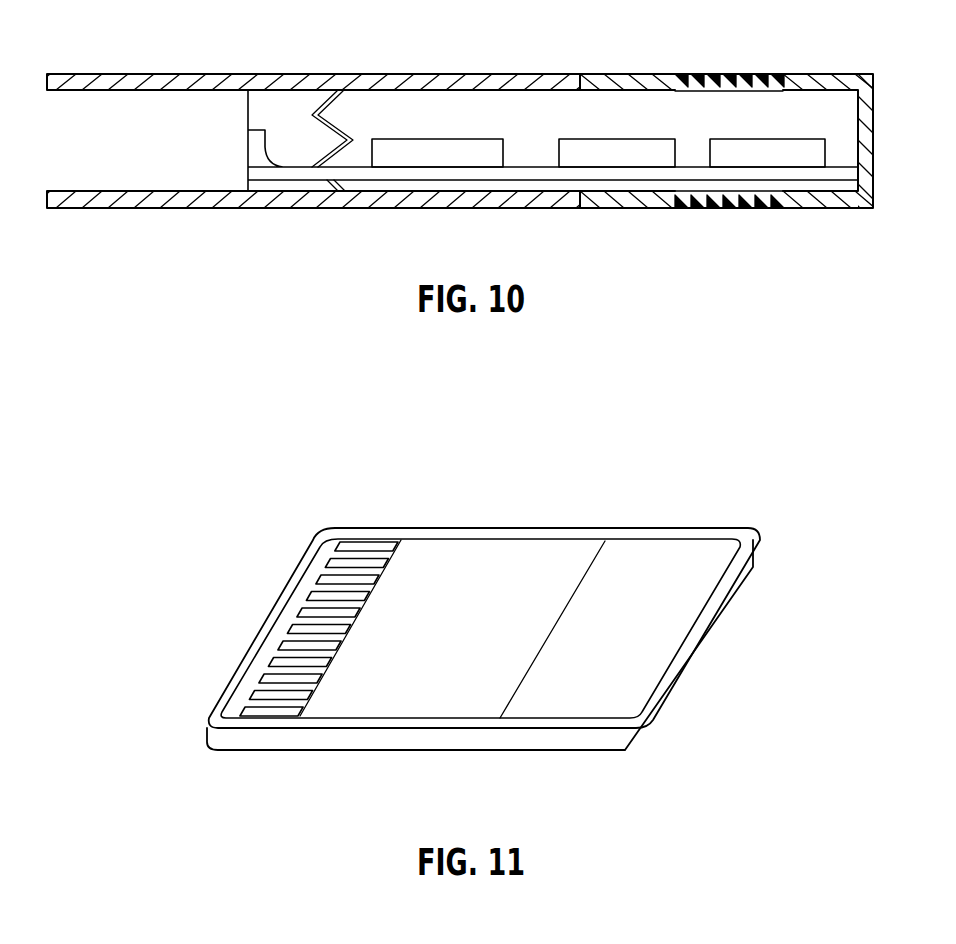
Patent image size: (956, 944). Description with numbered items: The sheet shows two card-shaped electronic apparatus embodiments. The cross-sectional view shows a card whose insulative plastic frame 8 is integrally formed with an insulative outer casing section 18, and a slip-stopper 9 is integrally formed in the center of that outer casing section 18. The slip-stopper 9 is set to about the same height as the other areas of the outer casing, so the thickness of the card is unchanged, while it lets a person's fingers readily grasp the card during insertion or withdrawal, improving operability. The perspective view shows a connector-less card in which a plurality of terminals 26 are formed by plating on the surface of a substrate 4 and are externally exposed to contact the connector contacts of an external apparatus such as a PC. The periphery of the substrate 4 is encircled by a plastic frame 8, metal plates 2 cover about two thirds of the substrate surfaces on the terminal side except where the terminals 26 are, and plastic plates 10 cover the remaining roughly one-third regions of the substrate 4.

In FIG. 11, the metal plate 2 is at (500, 557).
In FIG. 11, the substrate 4 is at (240, 698).
In FIG. 10, the plastic frame 8 is at (832, 70).
In FIG. 11, the plastic frame 8 is at (398, 740).
In FIG. 10, the slip-stopper 9 is at (720, 75).
In FIG. 11, the plastic plate 10 is at (667, 557).
In FIG. 10, the insulative outer casing section 18 is at (636, 74).
In FIG. 11, the terminals 26 is at (368, 545).